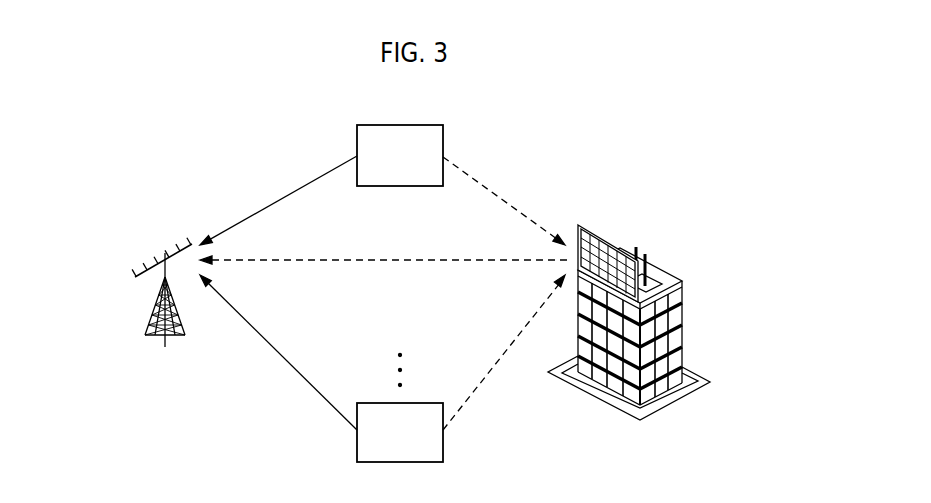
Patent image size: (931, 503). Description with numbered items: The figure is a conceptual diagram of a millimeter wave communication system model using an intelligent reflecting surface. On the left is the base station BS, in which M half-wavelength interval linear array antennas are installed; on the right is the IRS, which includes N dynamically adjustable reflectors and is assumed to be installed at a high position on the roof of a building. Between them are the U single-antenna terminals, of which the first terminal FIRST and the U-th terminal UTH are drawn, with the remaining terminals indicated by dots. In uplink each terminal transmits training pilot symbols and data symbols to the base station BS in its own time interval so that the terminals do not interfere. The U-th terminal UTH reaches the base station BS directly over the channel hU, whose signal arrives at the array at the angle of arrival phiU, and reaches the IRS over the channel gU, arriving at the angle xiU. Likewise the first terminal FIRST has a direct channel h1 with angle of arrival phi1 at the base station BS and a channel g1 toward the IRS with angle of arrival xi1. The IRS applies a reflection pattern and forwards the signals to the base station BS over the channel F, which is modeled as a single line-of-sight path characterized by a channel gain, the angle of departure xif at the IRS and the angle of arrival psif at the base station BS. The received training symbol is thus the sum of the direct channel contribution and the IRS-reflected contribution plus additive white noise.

The channel between the base station and the U-th terminal hU is at (278, 200).
The channel between the IRS and the U-th terminal gU is at (504, 201).
The channel between the base station and the first terminal h1 is at (278, 352).
The channel between the IRS and the first terminal g1 is at (504, 352).
The channel between the base station and the IRS F is at (383, 271).
The angle of arrival of the signal between the base station and the U-th terminal phiU is at (205, 224).
The angle of arrival of the signal between the base station and the first terminal phi1 is at (205, 298).
The angle of arrival of the signal of channel F psif is at (222, 277).
The angle of arrival of the signal between the IRS and the U-th terminal xiU is at (551, 230).
The angle of arrival of the signal between the IRS and the first terminal xi1 is at (563, 301).
The angle of departure of channel F xif is at (536, 278).
The base station BS is at (148, 319).
The element IRS is at (629, 293).
The U-th terminal UTH is at (400, 155).
The first terminal FIRST is at (400, 432).